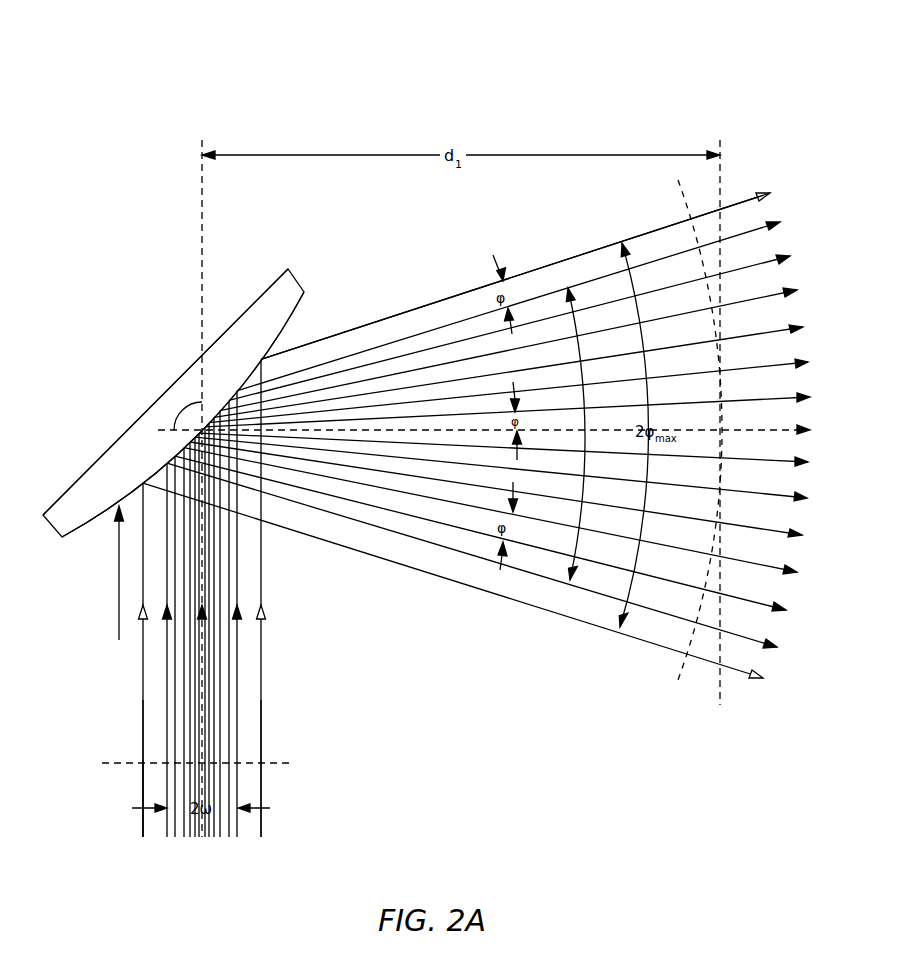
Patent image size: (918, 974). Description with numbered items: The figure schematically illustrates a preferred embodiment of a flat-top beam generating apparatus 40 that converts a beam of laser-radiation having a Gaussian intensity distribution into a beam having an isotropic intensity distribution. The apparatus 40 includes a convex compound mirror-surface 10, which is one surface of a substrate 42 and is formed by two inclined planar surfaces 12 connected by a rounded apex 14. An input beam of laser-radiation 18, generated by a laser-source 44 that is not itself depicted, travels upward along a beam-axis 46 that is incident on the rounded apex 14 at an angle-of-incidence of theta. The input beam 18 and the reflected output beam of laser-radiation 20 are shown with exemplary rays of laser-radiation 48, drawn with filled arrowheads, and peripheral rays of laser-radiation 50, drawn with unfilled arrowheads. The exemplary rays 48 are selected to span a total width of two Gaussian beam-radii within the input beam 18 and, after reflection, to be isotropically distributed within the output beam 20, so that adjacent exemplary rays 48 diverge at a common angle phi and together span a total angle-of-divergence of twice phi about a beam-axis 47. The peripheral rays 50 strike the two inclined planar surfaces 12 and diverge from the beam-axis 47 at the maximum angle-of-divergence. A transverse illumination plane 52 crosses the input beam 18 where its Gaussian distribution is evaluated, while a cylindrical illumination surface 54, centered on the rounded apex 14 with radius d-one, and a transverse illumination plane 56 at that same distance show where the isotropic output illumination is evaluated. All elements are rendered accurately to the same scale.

The flat-top beam generating apparatus 40 is at (188, 90).
The beam of laser-radiation 20 is at (430, 300).
The peripheral rays of laser-radiation 50 is at (428, 514).
The inclined planar surfaces 12 is at (295, 316).
The substrate 42 is at (182, 378).
The rounded apex 14 is at (185, 430).
The mirror-surface 10 is at (107, 582).
The exemplary rays of laser-radiation 48 is at (407, 476).
The beam-axis 47 is at (456, 533).
The beam-axis 46 is at (212, 698).
The transverse illumination plane 52 is at (290, 767).
The beam of laser-radiation 18 is at (128, 794).
The cylindrical illumination surface 54 is at (677, 688).
The transverse illumination plane 56 is at (720, 708).
The laser-source 44 is at (203, 860).